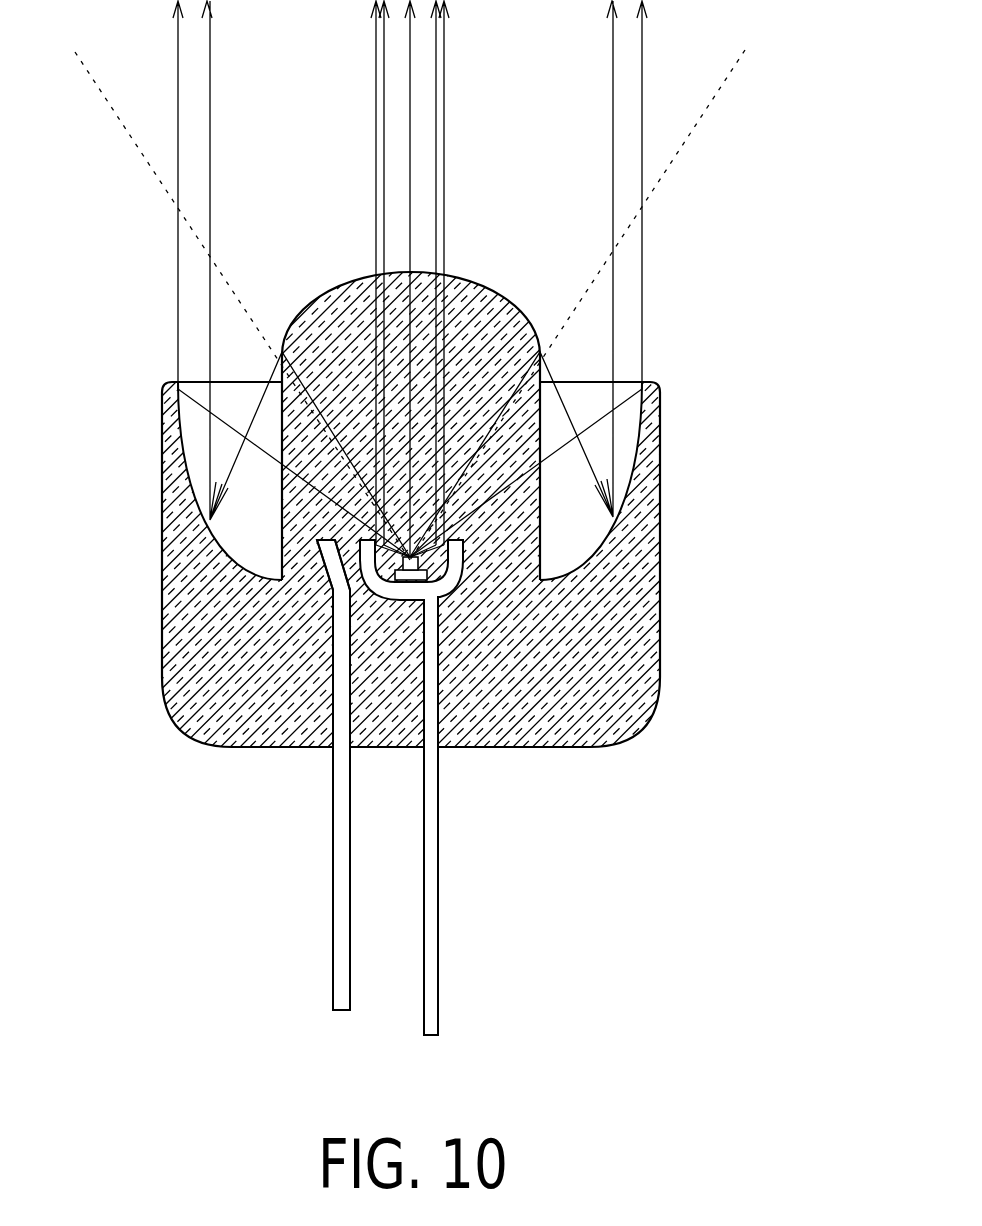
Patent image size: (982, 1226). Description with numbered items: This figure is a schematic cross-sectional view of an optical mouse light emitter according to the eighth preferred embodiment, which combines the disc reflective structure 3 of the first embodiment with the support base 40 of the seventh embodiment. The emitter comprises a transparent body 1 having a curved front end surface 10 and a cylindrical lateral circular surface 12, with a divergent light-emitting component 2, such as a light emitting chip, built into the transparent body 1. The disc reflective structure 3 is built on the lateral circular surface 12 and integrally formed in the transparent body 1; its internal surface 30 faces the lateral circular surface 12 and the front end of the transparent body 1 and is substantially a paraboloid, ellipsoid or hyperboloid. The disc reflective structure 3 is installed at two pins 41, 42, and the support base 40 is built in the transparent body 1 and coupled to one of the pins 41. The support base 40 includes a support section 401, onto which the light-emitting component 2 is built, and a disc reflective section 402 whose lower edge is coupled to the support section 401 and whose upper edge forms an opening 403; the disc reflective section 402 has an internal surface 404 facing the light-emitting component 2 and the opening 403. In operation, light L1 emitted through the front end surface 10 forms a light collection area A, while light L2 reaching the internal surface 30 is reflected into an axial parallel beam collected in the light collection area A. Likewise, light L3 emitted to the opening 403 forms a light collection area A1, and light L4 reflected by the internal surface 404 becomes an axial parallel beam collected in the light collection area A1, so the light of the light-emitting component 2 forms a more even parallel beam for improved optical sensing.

The transparent body 1 is at (497, 522).
The light-emitting component 2 is at (438, 597).
The disc reflective structure 3 is at (622, 547).
The curved front end surface 10 is at (500, 292).
The cylindrical lateral circular surface 12 is at (541, 488).
The internal surface 30 is at (638, 418).
The support base 40 is at (462, 580).
The pin 41 is at (438, 892).
The pin 42 is at (333, 883).
The support section 401 is at (395, 600).
The disc reflective section 402 is at (320, 566).
The opening 403 is at (360, 540).
The internal surface 404 is at (460, 547).
The light L1 is at (412, 135).
The light L2 is at (640, 345).
The light L3 is at (410, 279).
The light L4 is at (443, 52).
The light collection area A is at (675, 112).
The light collection area A1 is at (577, 305).